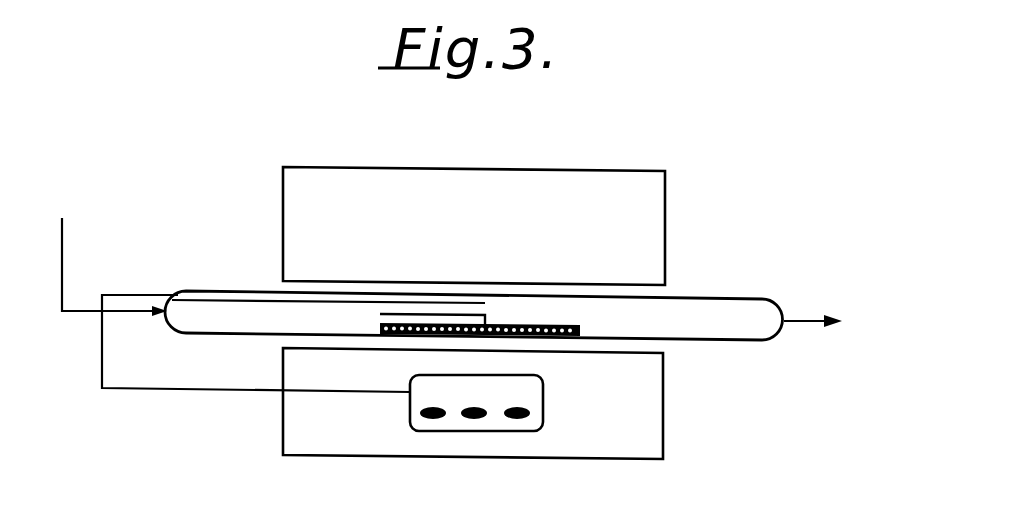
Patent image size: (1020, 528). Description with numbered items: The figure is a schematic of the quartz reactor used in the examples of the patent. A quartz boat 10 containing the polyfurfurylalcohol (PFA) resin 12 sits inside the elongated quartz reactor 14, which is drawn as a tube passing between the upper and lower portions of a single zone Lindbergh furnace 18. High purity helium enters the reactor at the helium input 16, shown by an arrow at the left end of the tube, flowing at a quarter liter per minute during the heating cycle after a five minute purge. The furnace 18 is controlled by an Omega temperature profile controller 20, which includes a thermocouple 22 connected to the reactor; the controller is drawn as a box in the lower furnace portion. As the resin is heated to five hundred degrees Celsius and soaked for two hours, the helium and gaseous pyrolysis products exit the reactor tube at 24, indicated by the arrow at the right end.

The quartz boat 10 is at (380, 314).
The PFA resin 12 is at (541, 326).
The quartz reactor 14 is at (216, 291).
The helium input 16 is at (74, 212).
The single zone Lindbergh furnace 18 is at (724, 149).
The temperature profile controller 20 is at (535, 405).
The thermocouple 22 is at (205, 393).
The reactor tube exit 24 is at (837, 320).